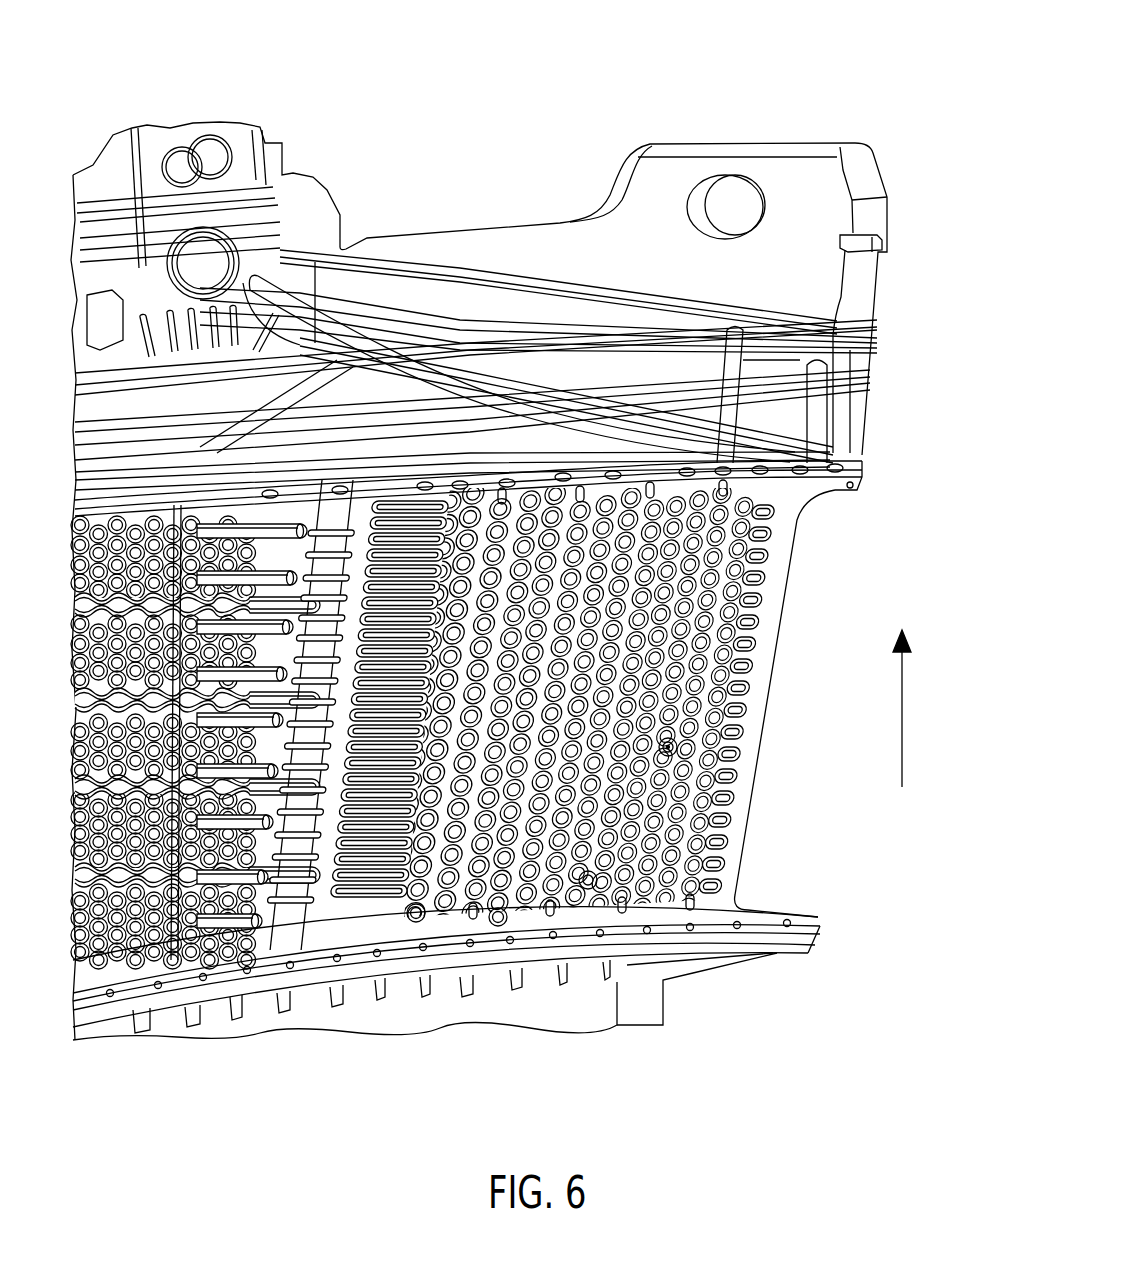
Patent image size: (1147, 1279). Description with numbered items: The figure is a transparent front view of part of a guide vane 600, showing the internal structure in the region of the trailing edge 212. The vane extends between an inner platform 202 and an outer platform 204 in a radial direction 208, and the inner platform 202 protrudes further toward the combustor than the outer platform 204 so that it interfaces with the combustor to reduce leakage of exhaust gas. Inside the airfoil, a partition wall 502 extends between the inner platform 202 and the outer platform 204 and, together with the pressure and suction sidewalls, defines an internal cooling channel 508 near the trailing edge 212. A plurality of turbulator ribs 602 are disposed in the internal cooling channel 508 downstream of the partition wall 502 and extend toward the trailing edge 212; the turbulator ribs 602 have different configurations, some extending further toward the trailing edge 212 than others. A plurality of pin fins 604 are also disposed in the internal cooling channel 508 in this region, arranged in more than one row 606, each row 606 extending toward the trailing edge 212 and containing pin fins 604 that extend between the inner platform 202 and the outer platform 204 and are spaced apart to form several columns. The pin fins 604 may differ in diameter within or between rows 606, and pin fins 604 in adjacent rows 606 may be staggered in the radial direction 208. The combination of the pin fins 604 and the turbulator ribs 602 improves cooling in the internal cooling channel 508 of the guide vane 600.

The guide vane 600 is at (738, 80).
The outer platform 204 is at (862, 431).
The trailing edge 212 is at (772, 617).
The radial direction 208 is at (904, 716).
The pin fin 604 is at (668, 747).
The inner platform 202 is at (820, 931).
The partition wall 502 is at (295, 935).
The turbulator rib 602 is at (373, 903).
The row 606 is at (417, 922).
The internal cooling channel 508 is at (588, 905).